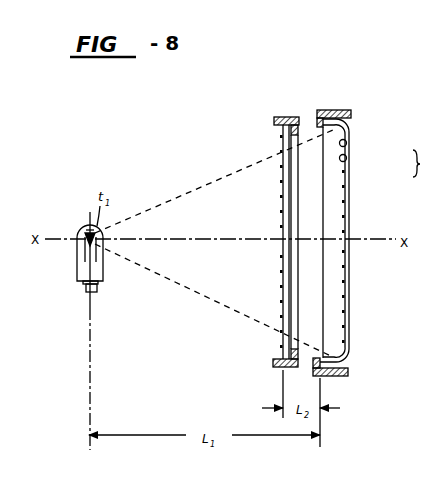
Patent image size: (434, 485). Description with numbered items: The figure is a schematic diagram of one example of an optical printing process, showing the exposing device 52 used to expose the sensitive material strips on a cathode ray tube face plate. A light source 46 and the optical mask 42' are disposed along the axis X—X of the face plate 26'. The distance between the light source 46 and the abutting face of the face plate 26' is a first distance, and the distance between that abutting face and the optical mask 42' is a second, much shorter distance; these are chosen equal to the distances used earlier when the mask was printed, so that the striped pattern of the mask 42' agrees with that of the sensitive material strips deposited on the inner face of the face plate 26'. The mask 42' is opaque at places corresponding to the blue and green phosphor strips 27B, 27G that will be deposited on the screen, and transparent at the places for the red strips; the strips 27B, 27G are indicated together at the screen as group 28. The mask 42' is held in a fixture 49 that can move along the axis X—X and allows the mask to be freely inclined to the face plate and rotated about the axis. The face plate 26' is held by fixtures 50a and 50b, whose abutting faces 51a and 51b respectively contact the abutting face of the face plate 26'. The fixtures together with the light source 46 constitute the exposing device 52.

The light source 46 is at (78, 262).
The exposing device 52 is at (182, 179).
The optical mask 42' is at (258, 237).
The fixture for the optical mask 49 is at (291, 117).
The face plate 26' is at (357, 240).
The blue phosphor strips 27B is at (347, 144).
The green phosphor strips 27G is at (347, 159).
The phosphor stripes 28 is at (433, 174).
The abutting face 51a is at (331, 110).
The fixture for the face plate 50a is at (346, 110).
The abutting face 51b is at (322, 372).
The fixture for the face plate 50b is at (349, 373).